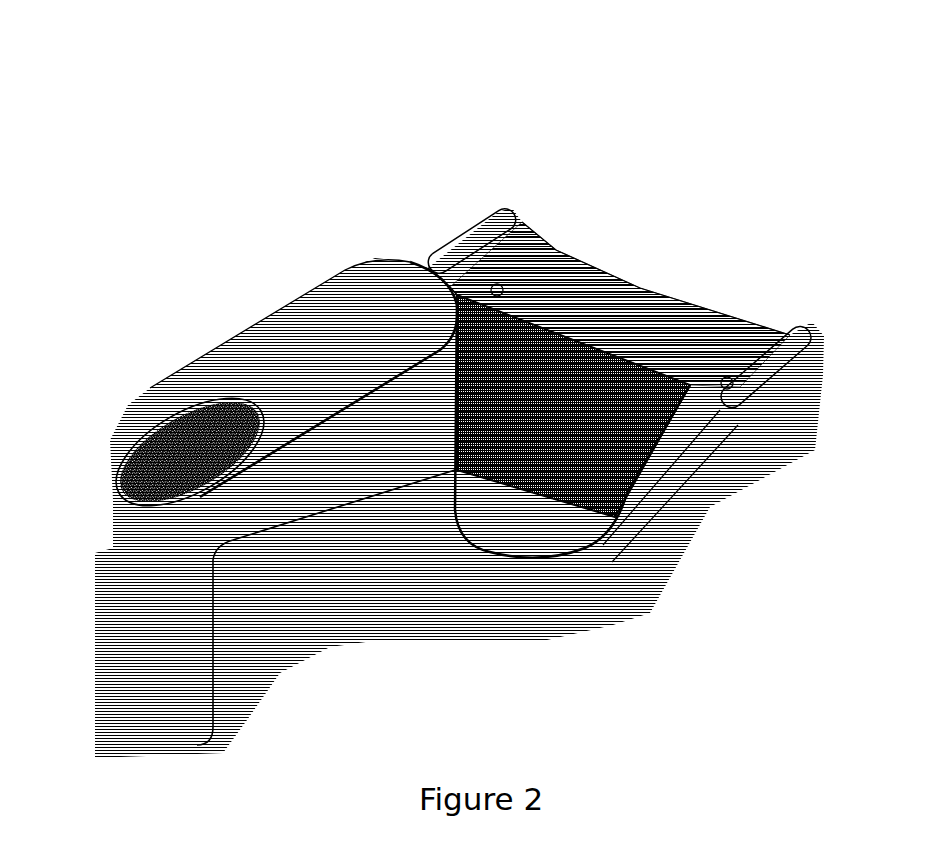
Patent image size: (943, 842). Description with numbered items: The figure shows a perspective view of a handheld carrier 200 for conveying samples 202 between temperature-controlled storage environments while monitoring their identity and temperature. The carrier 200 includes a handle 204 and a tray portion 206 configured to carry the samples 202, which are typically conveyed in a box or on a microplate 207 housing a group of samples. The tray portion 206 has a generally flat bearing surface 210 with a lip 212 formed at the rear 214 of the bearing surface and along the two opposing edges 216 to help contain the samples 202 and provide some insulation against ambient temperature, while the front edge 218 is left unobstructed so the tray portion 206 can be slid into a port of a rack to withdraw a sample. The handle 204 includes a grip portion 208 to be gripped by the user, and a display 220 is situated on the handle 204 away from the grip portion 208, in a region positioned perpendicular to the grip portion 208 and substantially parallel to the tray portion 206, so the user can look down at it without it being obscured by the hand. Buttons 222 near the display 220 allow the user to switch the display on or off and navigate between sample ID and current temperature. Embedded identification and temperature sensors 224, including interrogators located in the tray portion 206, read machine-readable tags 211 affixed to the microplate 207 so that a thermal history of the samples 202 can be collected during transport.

The handheld carrier 200 is at (391, 76).
The samples 202 is at (655, 432).
The handle 204 is at (163, 358).
The tray portion 206 is at (642, 266).
The microplate 207 is at (690, 396).
The grip portion 208 is at (152, 641).
The bearing surface 210 is at (724, 347).
The machine-readable tags 211 is at (680, 388).
The lip 212 is at (481, 222).
The rear 214 is at (395, 555).
The opposing edges 216 is at (444, 236).
The front edge 218 is at (552, 244).
The display 220 is at (140, 413).
The buttons 222 is at (150, 497).
The identification and temperature sensors 224 is at (728, 381).